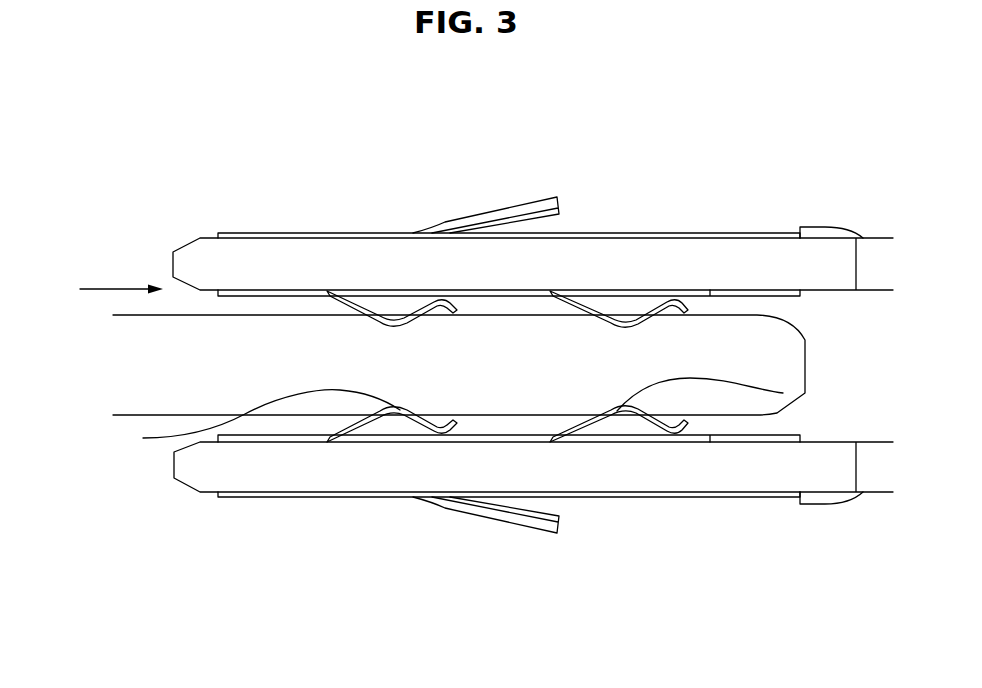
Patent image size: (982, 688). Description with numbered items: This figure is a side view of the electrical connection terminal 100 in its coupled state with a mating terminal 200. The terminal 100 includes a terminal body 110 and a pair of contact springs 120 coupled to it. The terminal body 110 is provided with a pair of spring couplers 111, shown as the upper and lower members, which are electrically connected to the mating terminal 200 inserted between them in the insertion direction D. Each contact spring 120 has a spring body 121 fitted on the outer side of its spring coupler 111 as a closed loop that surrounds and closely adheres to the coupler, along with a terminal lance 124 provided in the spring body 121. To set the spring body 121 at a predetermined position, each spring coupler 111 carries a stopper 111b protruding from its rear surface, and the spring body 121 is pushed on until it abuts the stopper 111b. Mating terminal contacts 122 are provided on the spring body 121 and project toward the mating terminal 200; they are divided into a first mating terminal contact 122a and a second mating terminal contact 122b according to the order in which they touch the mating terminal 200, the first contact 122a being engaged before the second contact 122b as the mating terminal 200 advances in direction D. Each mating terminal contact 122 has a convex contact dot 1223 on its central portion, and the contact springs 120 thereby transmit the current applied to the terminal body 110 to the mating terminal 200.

The electrical connection terminal 100 is at (762, 206).
The terminal body 110 is at (533, 368).
The spring coupler 111 is at (693, 262).
The stopper 111b is at (830, 232).
The contact spring 120 is at (231, 221).
The spring body 121 is at (292, 236).
The mating terminal contact 122 is at (482, 375).
The first mating terminal contact 122a is at (428, 307).
The second mating terminal contact 122b is at (580, 306).
The contact dot 1223 is at (783, 393).
The terminal lance 124 is at (515, 207).
The mating terminal 200 is at (133, 368).
The insertion direction D is at (121, 278).